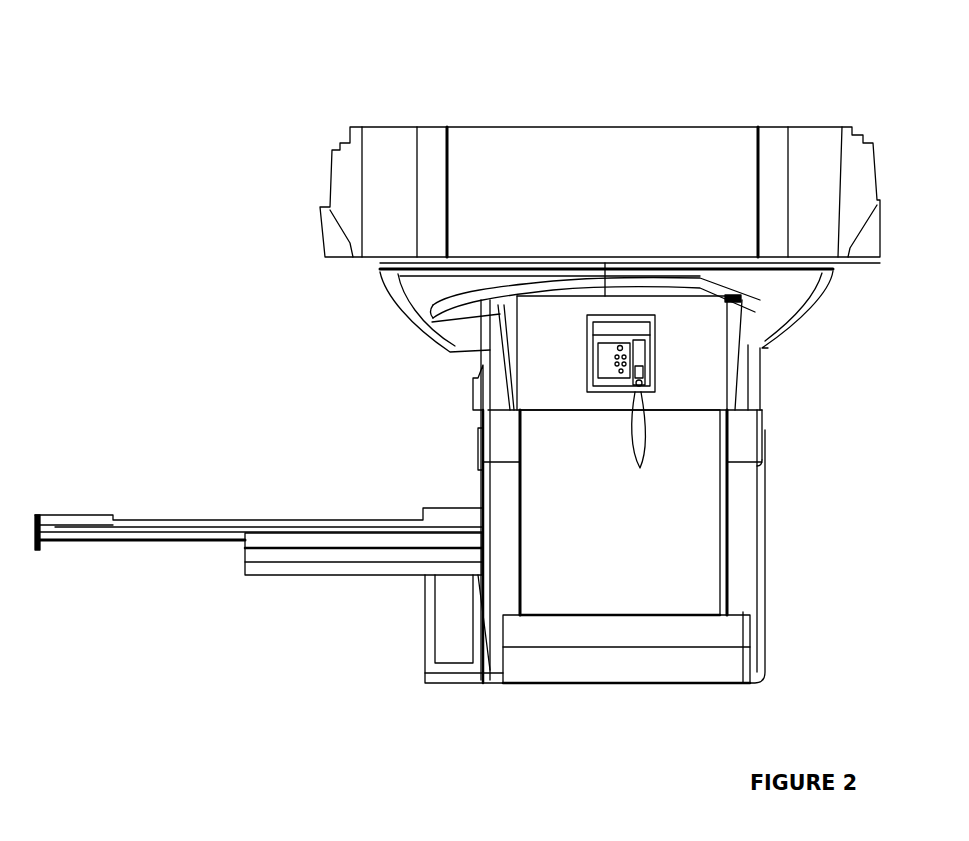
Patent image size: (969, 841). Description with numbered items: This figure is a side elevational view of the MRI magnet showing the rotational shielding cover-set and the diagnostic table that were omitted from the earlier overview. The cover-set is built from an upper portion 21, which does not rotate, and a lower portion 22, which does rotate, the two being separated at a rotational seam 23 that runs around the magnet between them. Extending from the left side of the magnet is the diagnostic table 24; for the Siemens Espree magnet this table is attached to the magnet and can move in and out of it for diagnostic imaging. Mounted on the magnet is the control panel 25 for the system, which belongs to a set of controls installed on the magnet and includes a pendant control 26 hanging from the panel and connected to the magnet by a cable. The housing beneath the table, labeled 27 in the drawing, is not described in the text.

The upper portion 21 is at (565, 177).
The lower portion 22 is at (808, 312).
The rotational seam 23 is at (837, 265).
The diagnostic table 24 is at (257, 518).
The control panel 25 is at (660, 365).
The pendant control 26 is at (640, 468).
The arm housing 27 is at (325, 567).